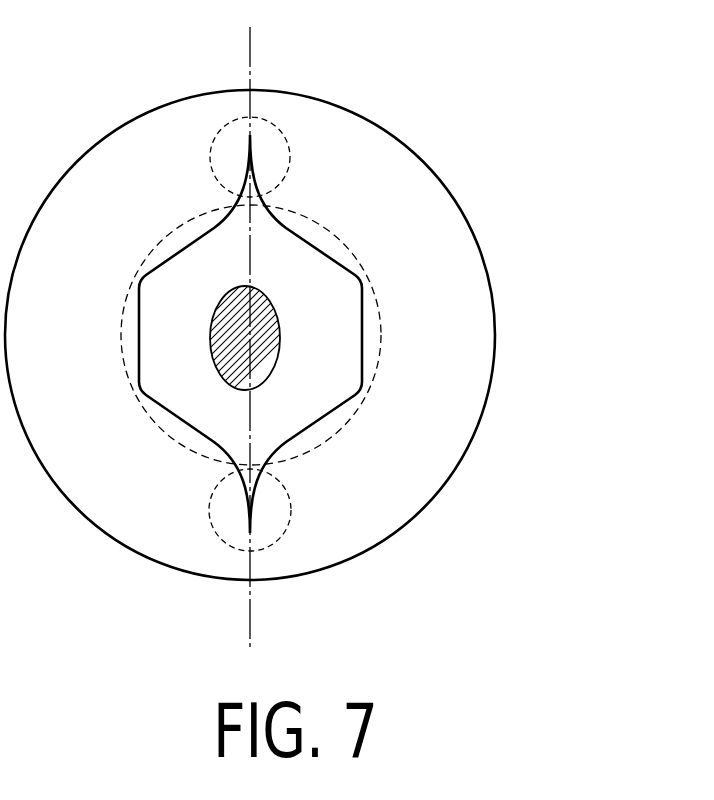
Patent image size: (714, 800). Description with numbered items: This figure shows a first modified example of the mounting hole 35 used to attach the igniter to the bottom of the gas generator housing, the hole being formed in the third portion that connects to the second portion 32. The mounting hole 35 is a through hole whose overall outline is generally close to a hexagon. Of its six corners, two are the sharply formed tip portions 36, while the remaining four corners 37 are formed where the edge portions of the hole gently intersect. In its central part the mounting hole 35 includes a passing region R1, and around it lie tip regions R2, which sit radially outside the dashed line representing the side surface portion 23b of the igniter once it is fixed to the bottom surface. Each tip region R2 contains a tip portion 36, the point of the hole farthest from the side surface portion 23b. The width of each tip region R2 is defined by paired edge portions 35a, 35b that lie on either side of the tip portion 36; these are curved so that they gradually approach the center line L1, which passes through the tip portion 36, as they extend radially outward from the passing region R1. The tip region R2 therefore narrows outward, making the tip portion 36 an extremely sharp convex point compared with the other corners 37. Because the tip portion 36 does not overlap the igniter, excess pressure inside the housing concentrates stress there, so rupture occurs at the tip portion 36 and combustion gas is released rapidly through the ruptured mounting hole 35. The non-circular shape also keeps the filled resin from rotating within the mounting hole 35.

The second portion 32 is at (478, 235).
The mounting hole 35 is at (183, 235).
The tip portion 36 is at (250, 136).
The corner 37 is at (140, 277).
The side surface portion 23b is at (380, 313).
The edge portion 35a is at (249, 500).
The edge portion 35b is at (252, 497).
The passing region R1 is at (211, 337).
The tip region R2 is at (282, 133).
The center line L1 is at (250, 42).